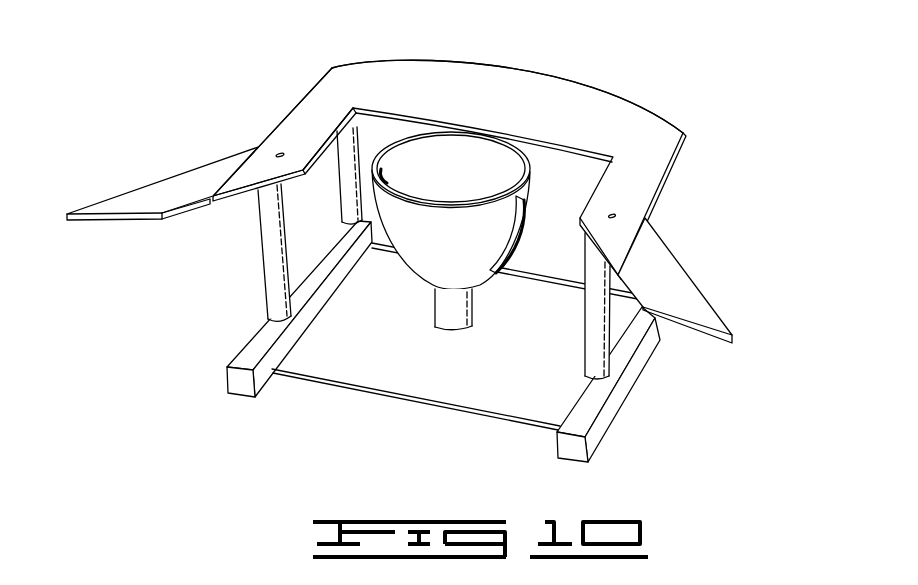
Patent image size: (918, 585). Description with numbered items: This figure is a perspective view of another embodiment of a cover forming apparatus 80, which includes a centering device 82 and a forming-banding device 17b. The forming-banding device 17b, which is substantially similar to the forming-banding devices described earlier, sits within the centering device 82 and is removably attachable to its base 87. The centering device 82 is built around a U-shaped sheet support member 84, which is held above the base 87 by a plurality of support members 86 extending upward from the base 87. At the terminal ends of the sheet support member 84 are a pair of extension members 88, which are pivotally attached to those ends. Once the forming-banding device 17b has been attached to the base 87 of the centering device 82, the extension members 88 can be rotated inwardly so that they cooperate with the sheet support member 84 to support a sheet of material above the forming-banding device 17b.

The cover forming apparatus 80 is at (456, 145).
The centering device 82 is at (422, 60).
The sheet support member 84 is at (320, 89).
The support members 86 is at (347, 192).
The base 87 is at (600, 422).
The extension members 88 is at (137, 188).
The forming-banding device 17b is at (408, 282).